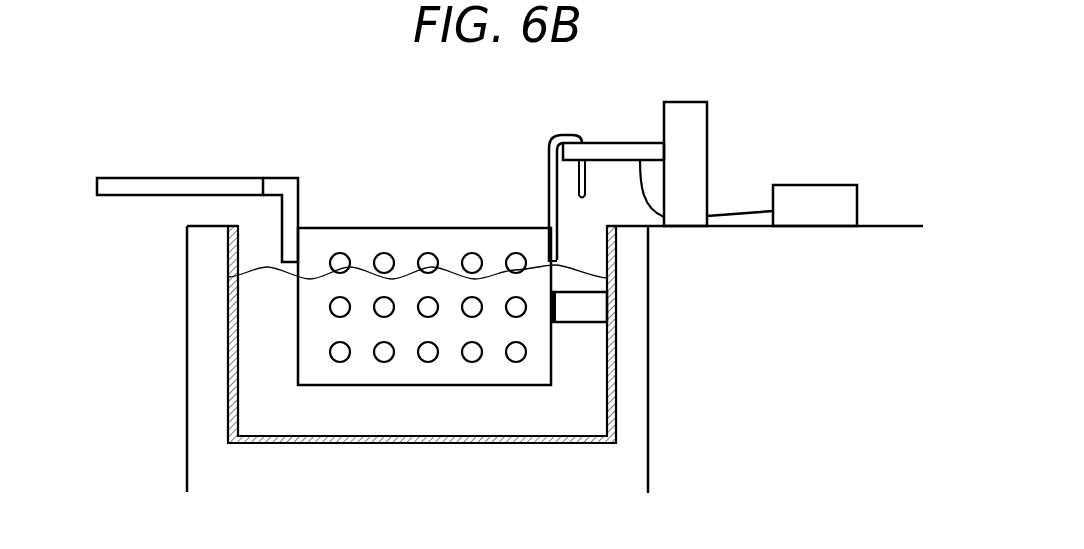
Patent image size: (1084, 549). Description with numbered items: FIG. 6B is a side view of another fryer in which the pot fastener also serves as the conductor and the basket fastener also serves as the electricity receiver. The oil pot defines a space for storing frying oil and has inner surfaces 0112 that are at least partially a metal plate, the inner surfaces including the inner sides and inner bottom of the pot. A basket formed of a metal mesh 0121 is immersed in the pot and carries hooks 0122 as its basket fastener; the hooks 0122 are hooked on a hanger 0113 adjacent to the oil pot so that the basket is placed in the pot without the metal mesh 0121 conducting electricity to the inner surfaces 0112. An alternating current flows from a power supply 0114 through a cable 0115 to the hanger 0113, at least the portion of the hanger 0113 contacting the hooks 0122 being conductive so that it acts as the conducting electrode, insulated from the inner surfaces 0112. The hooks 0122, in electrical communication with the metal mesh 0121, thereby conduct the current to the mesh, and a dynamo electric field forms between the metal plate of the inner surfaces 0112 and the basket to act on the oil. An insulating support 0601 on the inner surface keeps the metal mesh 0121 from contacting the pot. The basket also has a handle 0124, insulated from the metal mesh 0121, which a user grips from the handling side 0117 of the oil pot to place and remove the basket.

The handle 0124 is at (182, 178).
The metal mesh 0121 is at (408, 242).
The hooks 0122 is at (557, 134).
The hanger 0113 is at (684, 102).
The cable 0115 is at (733, 212).
The power supply 0114 is at (848, 184).
The handling side 0117 is at (187, 290).
The insulating support 0601 is at (588, 303).
The inner surfaces 0112 is at (608, 366).